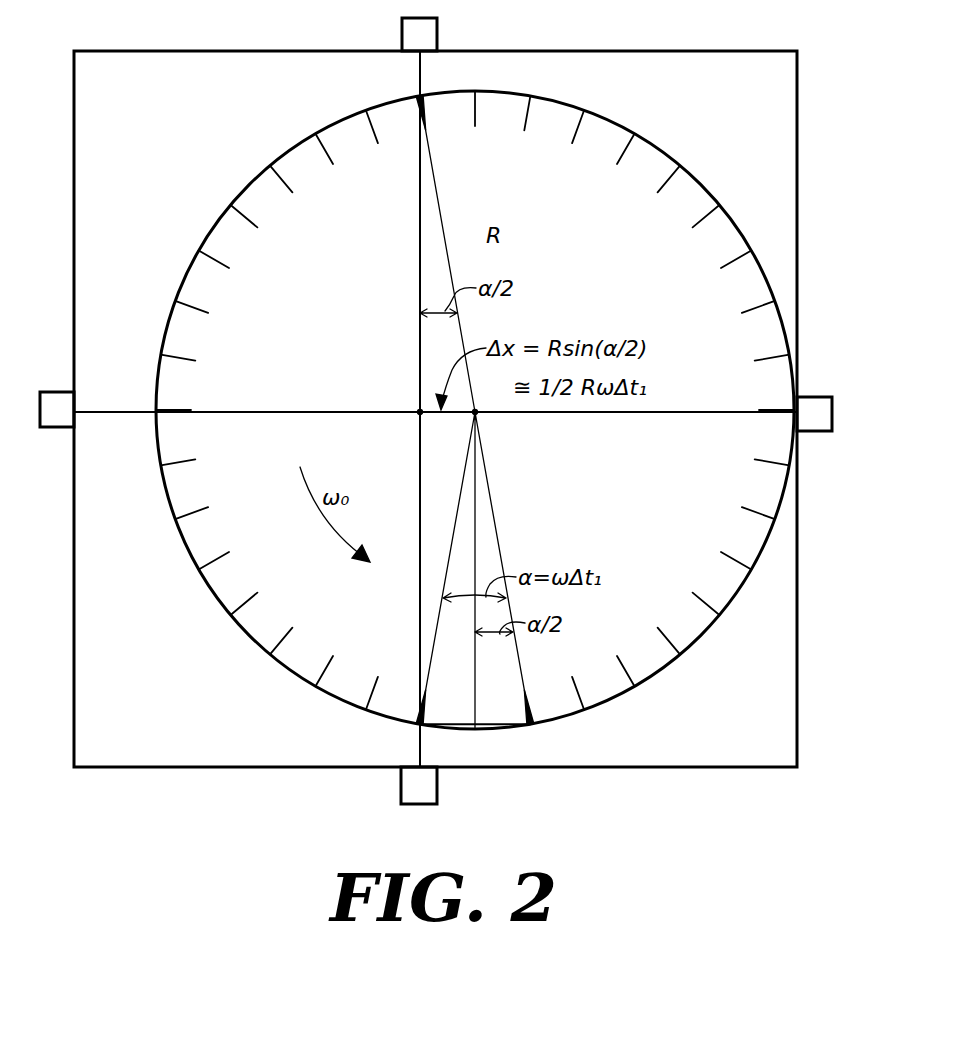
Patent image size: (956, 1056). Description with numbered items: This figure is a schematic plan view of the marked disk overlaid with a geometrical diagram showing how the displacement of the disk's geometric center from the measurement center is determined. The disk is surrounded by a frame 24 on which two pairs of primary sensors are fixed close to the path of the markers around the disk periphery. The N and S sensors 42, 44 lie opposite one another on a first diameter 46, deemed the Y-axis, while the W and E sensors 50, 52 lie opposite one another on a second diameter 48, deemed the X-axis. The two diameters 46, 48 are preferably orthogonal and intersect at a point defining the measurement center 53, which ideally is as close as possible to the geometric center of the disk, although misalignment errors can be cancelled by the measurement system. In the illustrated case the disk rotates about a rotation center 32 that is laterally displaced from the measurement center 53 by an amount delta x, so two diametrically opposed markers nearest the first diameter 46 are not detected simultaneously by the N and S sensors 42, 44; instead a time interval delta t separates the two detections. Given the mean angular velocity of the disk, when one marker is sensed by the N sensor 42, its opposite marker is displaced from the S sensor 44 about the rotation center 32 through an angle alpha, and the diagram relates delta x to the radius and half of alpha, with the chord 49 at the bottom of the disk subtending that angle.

The frame 24 is at (780, 138).
The rotation center 32 is at (478, 414).
The N sensor 42 is at (427, 32).
The S sensor 44 is at (411, 788).
The first diameter 46 is at (420, 236).
The second diameter 48 is at (286, 412).
The chord segment 49 is at (528, 712).
The W sensor 50 is at (60, 420).
The E sensor 52 is at (813, 405).
The measurement center 53 is at (420, 414).